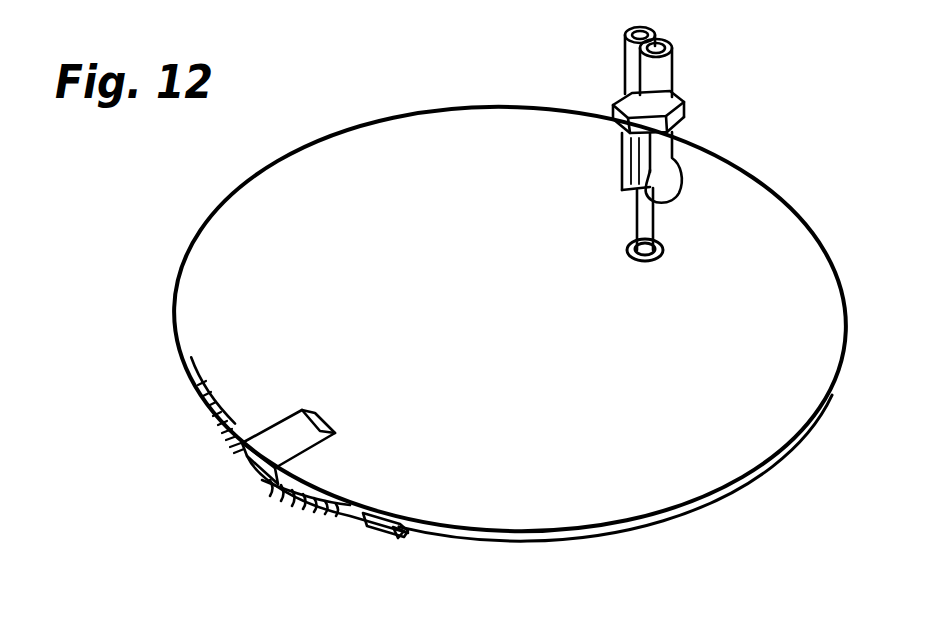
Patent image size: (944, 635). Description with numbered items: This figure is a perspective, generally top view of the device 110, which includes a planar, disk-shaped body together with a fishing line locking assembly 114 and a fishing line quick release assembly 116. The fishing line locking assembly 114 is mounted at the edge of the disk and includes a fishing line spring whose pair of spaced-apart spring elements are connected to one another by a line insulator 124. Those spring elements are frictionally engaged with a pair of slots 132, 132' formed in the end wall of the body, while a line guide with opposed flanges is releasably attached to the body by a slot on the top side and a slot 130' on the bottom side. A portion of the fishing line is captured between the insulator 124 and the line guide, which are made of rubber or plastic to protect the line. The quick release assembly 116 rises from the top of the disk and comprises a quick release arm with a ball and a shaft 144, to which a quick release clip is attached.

The device 110 is at (161, 250).
The fishing line quick release assembly 116 is at (707, 74).
The shaft 144 is at (650, 230).
The fishing line locking assembly 114 is at (283, 483).
The slot 132 is at (146, 405).
The line insulator 124 is at (254, 478).
The slot 130' is at (382, 512).
The slot 132' is at (372, 560).